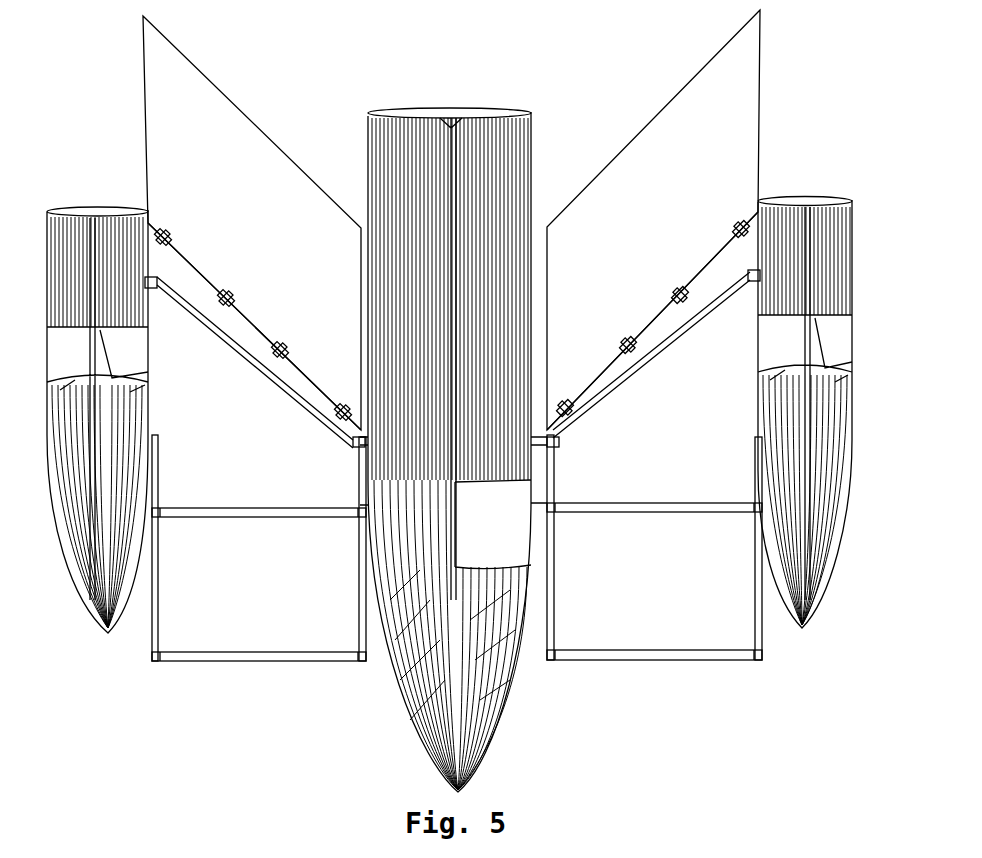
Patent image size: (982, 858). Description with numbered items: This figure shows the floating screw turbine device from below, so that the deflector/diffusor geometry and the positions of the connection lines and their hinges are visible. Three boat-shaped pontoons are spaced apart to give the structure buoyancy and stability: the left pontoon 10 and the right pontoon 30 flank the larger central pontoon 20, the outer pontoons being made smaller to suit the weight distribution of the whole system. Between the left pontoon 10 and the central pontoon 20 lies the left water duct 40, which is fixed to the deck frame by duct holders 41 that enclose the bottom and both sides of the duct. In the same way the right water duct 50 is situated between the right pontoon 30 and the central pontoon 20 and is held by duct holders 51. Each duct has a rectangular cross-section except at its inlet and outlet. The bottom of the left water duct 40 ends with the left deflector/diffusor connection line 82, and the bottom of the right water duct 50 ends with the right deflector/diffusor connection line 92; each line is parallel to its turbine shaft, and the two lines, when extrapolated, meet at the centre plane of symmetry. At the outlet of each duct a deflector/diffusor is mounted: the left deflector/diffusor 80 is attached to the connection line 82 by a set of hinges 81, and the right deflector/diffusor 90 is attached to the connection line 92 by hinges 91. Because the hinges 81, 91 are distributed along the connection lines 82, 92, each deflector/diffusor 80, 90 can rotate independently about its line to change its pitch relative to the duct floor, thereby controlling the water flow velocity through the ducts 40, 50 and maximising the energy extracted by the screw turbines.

The left pontoon 10 is at (842, 218).
The central pontoon 20 is at (483, 132).
The right pontoon 30 is at (62, 219).
The left water duct 40 is at (646, 493).
The duct holders 41 is at (640, 372).
The right water duct 50 is at (223, 500).
The duct holders 51 is at (258, 360).
The left deflector/diffusor 80 is at (653, 220).
The hinges 81 is at (622, 340).
The left deflector/diffusor connection line 82 is at (659, 315).
The right deflector/diffusor 90 is at (226, 223).
The hinges 91 is at (168, 230).
The right deflector/diffusor connection line 92 is at (258, 333).